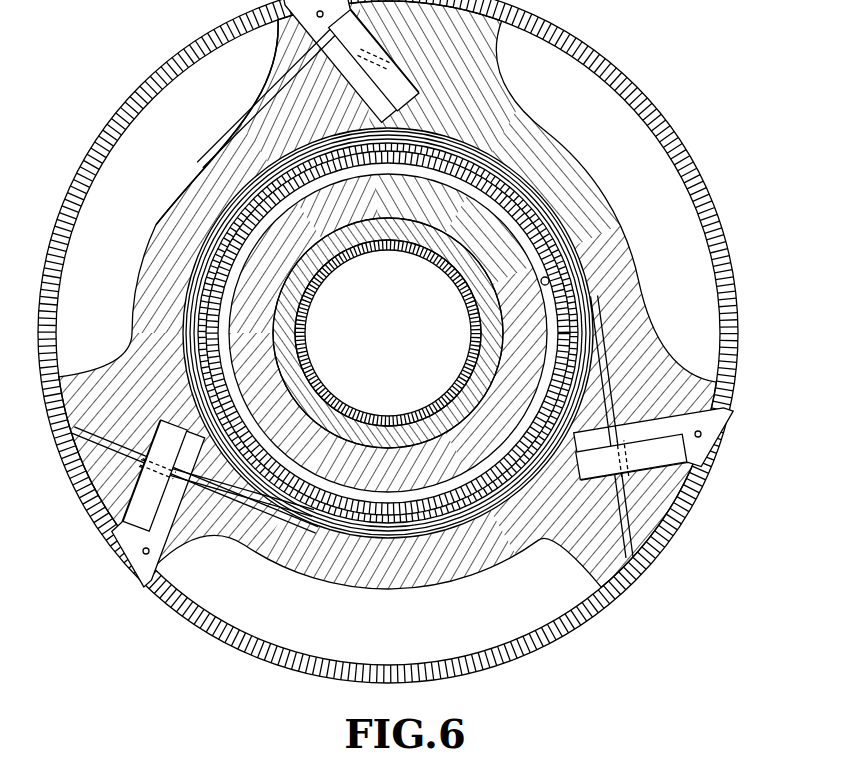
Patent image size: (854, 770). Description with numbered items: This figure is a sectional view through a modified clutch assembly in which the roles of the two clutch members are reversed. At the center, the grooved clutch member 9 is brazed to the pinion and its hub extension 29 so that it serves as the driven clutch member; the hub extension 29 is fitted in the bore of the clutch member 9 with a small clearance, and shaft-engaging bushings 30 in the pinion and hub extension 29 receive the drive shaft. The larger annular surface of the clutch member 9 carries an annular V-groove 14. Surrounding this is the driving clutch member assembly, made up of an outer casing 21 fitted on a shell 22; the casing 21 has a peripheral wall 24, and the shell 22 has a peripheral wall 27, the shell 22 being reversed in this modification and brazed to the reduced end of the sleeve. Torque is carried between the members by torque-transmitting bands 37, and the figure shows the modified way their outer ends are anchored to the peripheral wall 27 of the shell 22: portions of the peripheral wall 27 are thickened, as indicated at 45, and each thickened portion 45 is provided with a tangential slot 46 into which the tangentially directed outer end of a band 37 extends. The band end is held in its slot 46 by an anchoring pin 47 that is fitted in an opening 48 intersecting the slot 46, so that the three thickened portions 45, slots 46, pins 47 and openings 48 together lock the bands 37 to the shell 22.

The clutch member 9 is at (332, 208).
The annular V-groove 14 is at (542, 283).
The outer casing 21 is at (388, 341).
The shell 22 is at (140, 280).
The peripheral wall 24 is at (192, 45).
The peripheral wall 27 is at (190, 186).
The hub extension 29 is at (286, 378).
The shaft-engaging bushings 30 is at (303, 322).
The torque-transmitting bands 37 is at (507, 208).
The thickened portions 45 is at (283, 58).
The tangential slots 46 is at (323, 98).
The anchoring pins 47 is at (400, 90).
The openings 48 is at (316, 16).